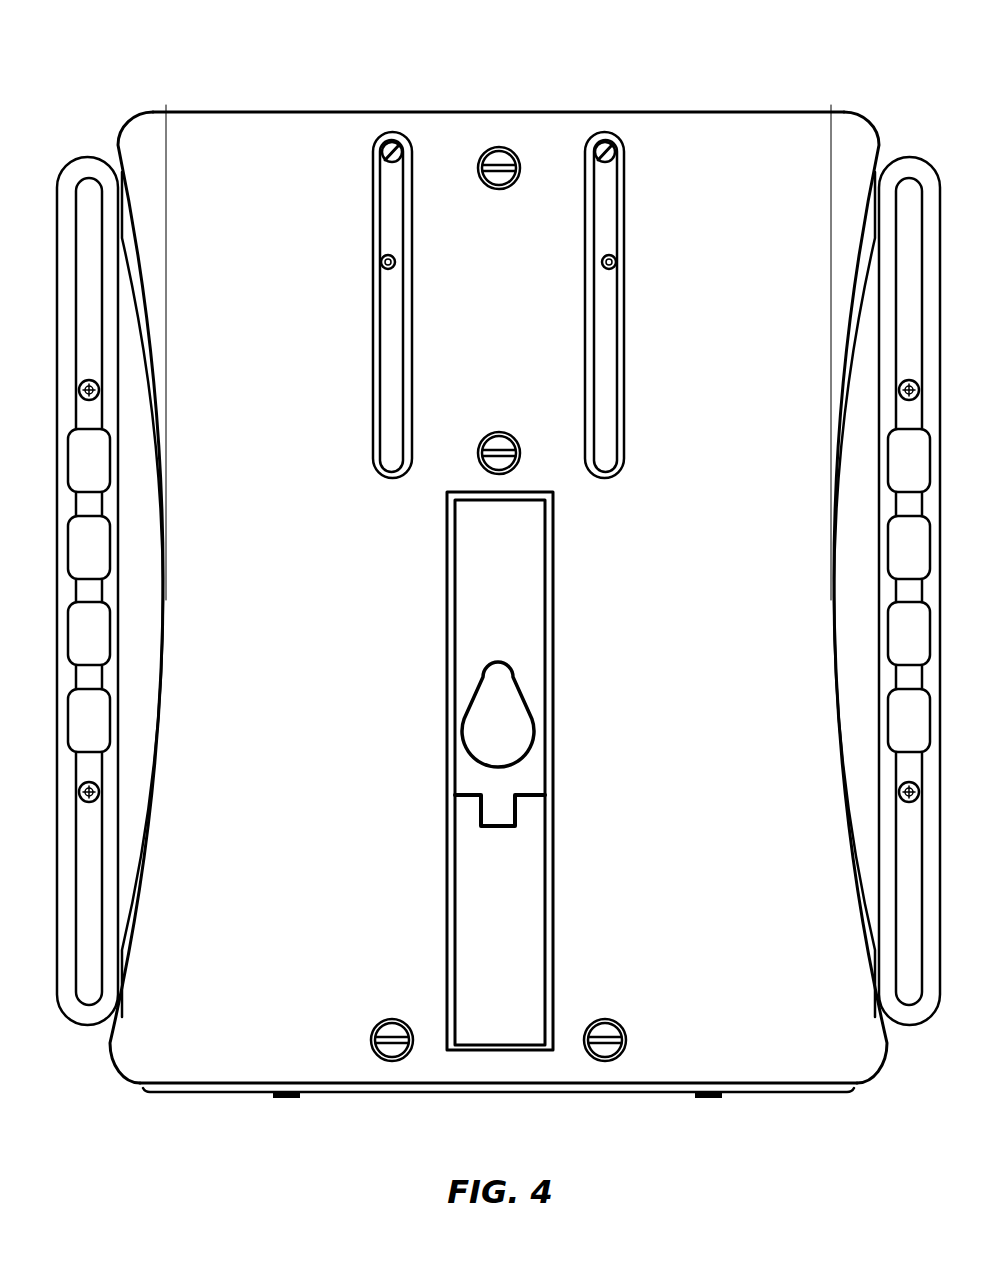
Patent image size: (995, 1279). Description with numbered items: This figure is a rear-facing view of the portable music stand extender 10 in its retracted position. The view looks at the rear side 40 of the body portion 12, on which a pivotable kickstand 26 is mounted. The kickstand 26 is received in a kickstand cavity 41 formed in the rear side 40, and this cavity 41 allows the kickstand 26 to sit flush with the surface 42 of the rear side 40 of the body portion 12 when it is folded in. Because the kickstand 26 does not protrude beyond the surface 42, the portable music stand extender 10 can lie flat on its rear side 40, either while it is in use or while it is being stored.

The portable music stand extender 10 is at (498, 558).
The body portion 12 is at (165, 599).
The pivotable kickstand 26 is at (527, 771).
The rear side 40 is at (688, 1083).
The kickstand cavity 41 is at (553, 753).
The surface 42 is at (553, 940).